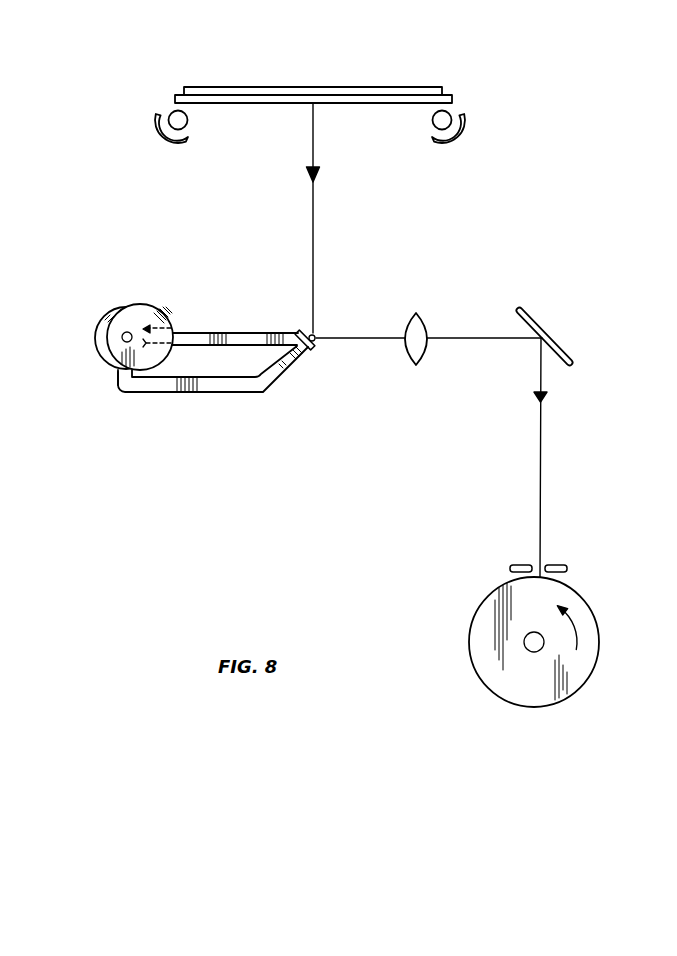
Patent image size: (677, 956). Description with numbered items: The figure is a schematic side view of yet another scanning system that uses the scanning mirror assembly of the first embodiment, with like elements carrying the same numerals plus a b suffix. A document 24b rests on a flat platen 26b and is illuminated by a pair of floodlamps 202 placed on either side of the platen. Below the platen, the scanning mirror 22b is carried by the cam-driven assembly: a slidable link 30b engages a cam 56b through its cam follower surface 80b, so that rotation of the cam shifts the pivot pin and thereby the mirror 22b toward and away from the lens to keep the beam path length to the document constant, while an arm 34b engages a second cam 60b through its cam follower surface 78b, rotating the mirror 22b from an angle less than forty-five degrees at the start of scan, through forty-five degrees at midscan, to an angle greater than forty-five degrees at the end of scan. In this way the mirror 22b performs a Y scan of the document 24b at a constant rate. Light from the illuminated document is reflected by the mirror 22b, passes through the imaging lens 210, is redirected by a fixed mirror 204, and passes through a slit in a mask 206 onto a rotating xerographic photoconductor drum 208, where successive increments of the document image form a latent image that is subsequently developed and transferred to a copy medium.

The document 24b is at (418, 93).
The platen 26b is at (360, 103).
The floodlamps 202 is at (157, 133).
The cam 56b is at (102, 340).
The second cam 60b is at (152, 312).
The cam follower surface 80b is at (162, 322).
The slidable link 30b is at (233, 333).
The arm 34b is at (245, 387).
The mirror 22b is at (318, 345).
The cam follower surface 78b is at (125, 366).
The imaging lens 210 is at (420, 330).
The fixed mirror 204 is at (545, 328).
The mask 206 is at (515, 563).
The rotating xerographic photoconductor drum 208 is at (583, 670).